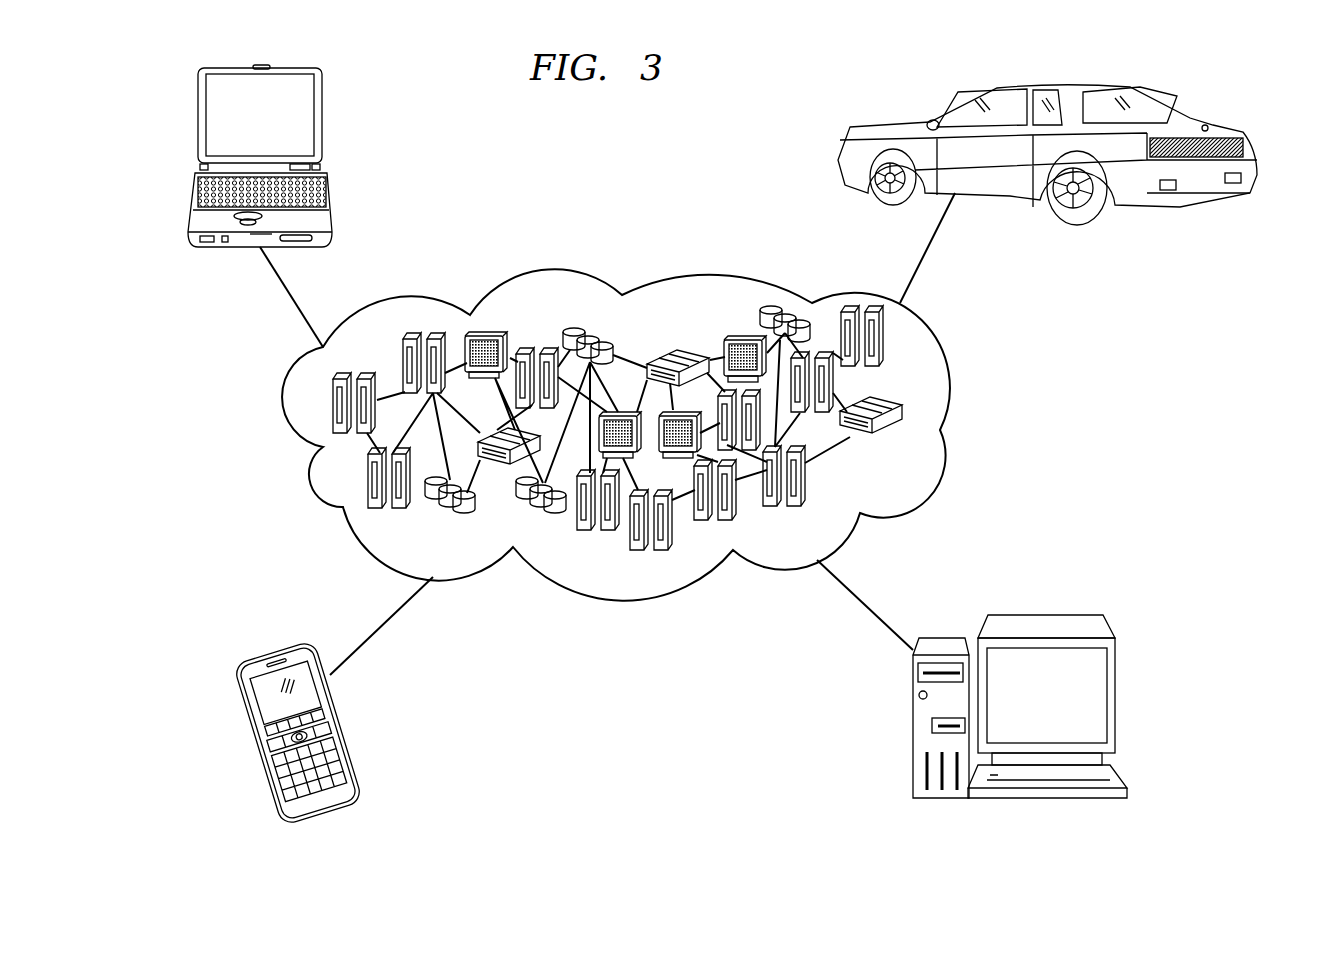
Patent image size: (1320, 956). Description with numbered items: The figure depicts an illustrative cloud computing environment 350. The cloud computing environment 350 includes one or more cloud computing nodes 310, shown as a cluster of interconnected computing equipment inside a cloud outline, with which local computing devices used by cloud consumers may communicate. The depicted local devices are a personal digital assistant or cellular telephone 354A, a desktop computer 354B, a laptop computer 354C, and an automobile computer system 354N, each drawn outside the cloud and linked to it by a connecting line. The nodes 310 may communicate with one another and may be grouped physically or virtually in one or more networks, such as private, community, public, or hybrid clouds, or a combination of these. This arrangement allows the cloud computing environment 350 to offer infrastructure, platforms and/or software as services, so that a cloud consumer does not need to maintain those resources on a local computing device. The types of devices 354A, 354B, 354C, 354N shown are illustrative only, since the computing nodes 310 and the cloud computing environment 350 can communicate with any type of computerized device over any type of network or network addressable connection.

The cloud computing environment 350 is at (952, 358).
The cloud computing nodes 310 is at (905, 436).
The personal digital assistant (PDA) or cellular telephone 354A is at (247, 720).
The desktop computer 354B is at (1050, 613).
The laptop computer 354C is at (197, 112).
The automobile computer system 354N is at (1218, 120).